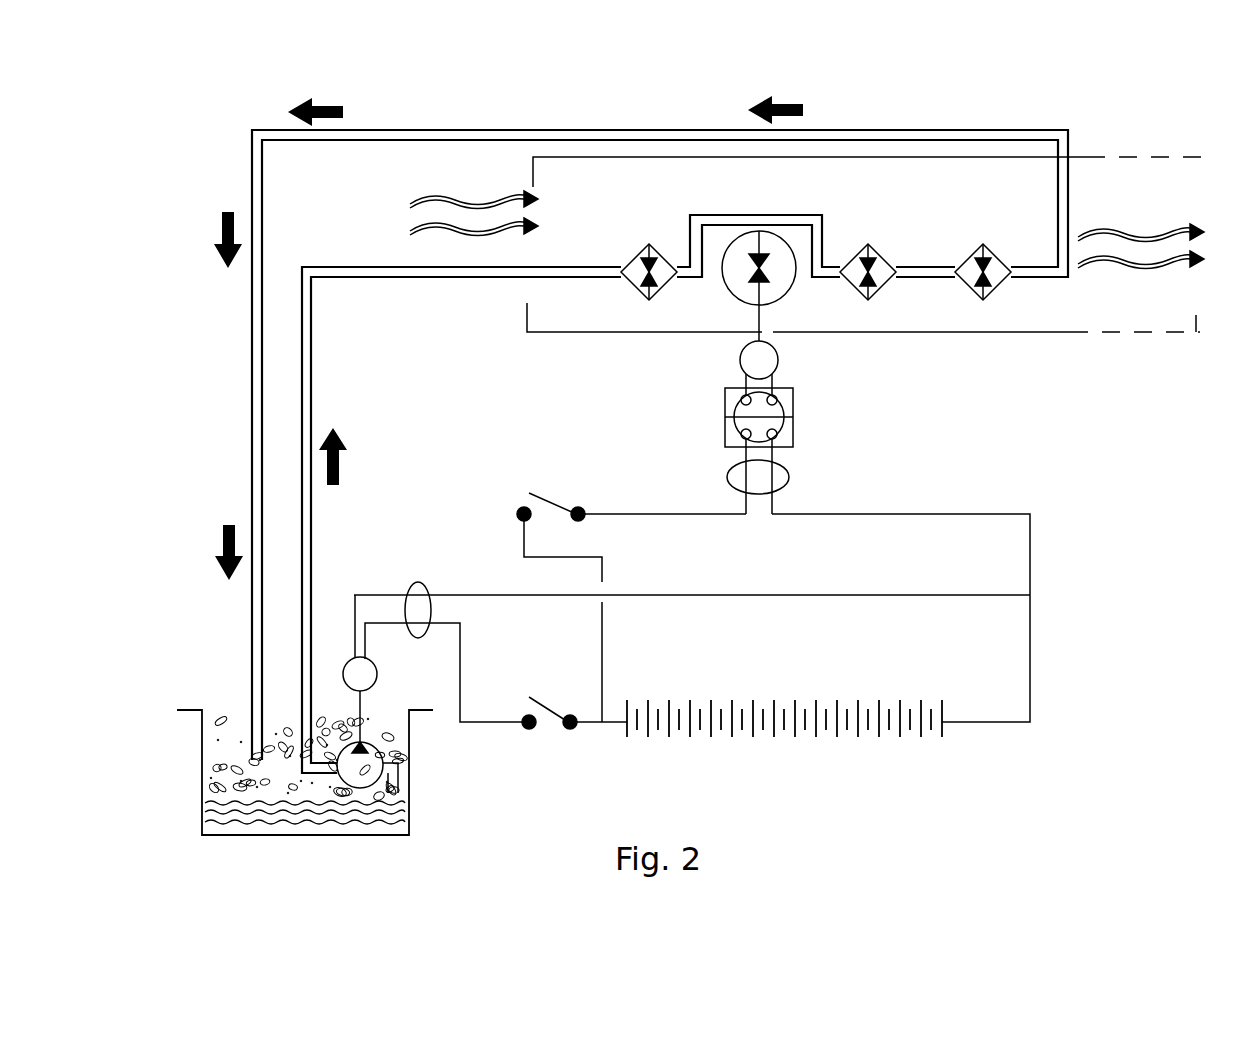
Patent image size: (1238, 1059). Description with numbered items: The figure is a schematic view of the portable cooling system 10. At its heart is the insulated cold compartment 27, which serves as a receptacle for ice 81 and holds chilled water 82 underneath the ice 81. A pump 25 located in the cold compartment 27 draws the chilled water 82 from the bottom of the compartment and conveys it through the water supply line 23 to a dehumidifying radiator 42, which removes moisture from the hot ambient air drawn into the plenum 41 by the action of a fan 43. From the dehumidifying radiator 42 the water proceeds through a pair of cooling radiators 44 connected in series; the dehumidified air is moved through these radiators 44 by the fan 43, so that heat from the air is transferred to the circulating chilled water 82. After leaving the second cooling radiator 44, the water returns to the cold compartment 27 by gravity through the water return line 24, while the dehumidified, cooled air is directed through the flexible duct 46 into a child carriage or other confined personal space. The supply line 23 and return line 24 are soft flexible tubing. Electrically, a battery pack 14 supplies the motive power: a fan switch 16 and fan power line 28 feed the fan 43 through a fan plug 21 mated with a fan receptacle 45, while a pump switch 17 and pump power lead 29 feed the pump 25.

The portable cooling system 10 is at (176, 160).
The battery pack 14 is at (835, 705).
The fan switch 16 is at (553, 500).
The pump switch 17 is at (540, 697).
The fan plug 21 is at (787, 426).
The water supply line 23 is at (312, 358).
The water return line 24 is at (262, 196).
The pump 25 is at (352, 785).
The cold compartment 27 is at (408, 810).
The fan power line 28 is at (790, 475).
The pump power lead 29 is at (418, 583).
The plenum 41 is at (633, 157).
The dehumidifying radiator 42 is at (637, 290).
The fan 43 is at (737, 298).
The cooling radiator 44 is at (868, 298).
The fan receptacle 45 is at (783, 403).
The flexible duct 46 is at (1120, 152).
The ice 81 is at (238, 727).
The chilled water 82 is at (210, 805).